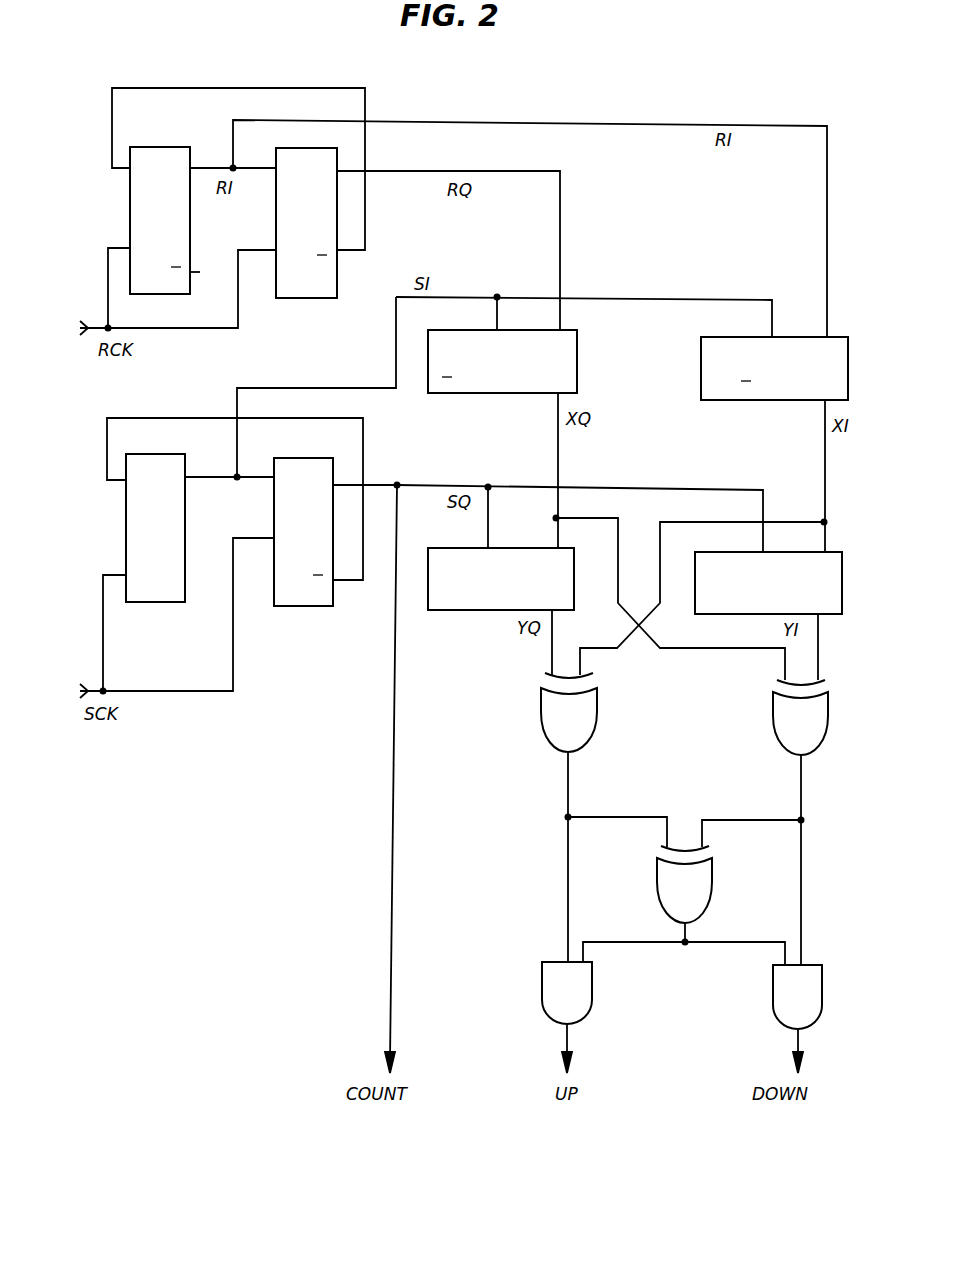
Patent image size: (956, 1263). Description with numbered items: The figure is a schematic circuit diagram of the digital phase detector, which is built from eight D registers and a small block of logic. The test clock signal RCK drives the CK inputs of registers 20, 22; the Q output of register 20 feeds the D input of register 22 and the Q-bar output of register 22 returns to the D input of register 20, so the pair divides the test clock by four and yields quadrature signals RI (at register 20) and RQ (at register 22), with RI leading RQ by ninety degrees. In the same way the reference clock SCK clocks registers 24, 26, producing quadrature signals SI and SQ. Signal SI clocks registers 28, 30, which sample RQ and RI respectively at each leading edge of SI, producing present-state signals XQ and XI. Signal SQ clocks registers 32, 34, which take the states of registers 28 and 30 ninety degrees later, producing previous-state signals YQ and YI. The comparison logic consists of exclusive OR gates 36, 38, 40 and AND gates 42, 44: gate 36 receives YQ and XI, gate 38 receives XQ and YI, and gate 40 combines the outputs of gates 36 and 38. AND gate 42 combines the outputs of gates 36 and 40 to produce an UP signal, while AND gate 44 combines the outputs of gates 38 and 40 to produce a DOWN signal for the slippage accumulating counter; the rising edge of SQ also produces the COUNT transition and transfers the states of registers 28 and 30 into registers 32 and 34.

The D register 20 is at (155, 294).
The D register 22 is at (298, 298).
The D register 24 is at (165, 602).
The D register 26 is at (305, 610).
The D register 28 is at (480, 393).
The D register 30 is at (767, 400).
The D register 32 is at (470, 612).
The D register 34 is at (768, 617).
The exclusive OR gate 36 is at (598, 711).
The exclusive OR gate 38 is at (772, 719).
The exclusive OR gate 40 is at (711, 897).
The AND gate 42 is at (592, 998).
The AND gate 44 is at (773, 1007).